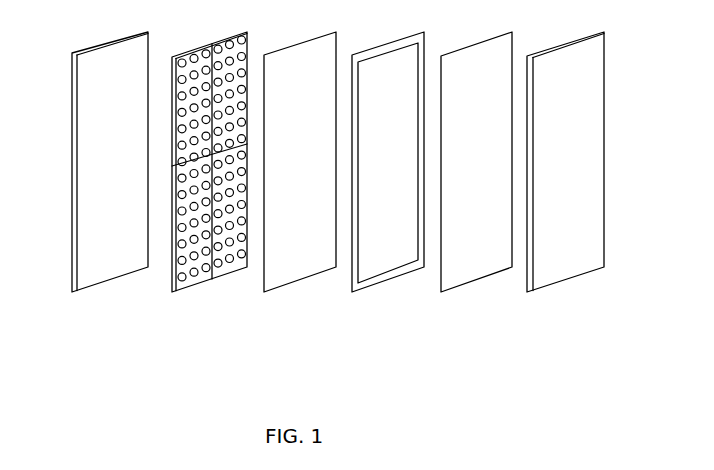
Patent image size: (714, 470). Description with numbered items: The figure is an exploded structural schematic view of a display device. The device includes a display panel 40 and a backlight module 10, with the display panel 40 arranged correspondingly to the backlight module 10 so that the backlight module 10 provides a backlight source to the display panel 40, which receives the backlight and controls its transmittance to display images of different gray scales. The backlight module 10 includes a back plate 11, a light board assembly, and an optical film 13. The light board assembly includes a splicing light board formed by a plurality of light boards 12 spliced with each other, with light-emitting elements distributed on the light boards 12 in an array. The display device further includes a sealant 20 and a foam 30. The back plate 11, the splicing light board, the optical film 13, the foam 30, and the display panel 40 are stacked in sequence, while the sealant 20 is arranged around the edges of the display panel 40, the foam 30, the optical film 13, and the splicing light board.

The backlight module 10 is at (247, 337).
The back plate 11 is at (120, 265).
The light board 12 is at (217, 267).
The optical film 13 is at (313, 263).
The sealant 20 is at (399, 262).
The foam 30 is at (488, 262).
The display panel 40 is at (579, 263).